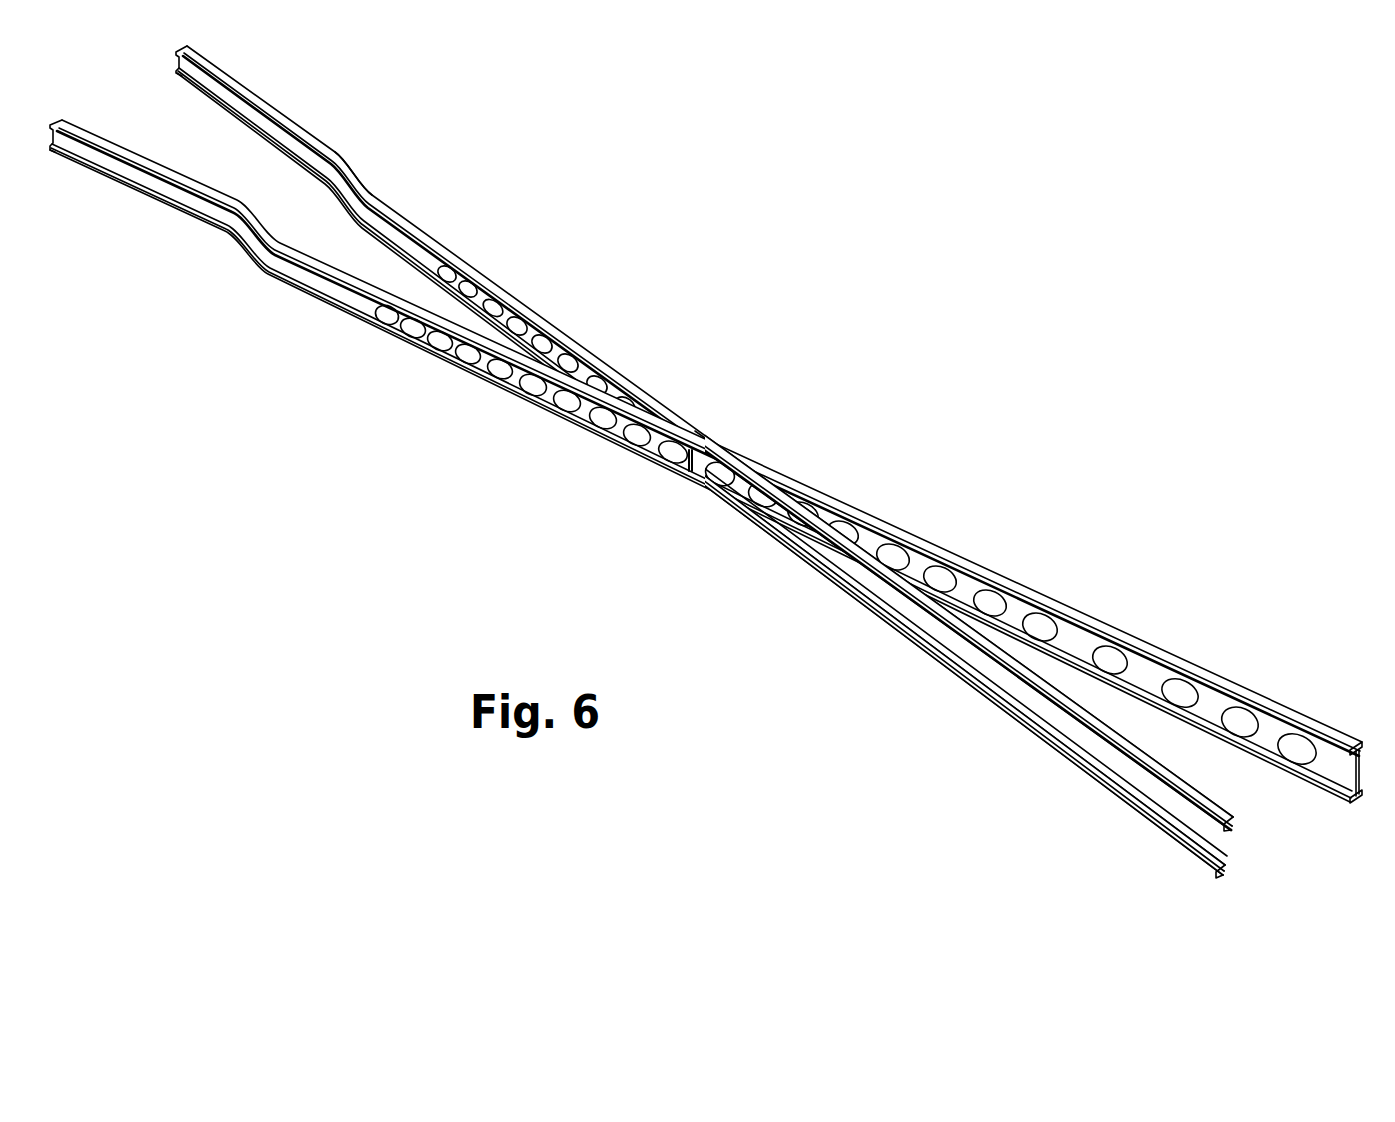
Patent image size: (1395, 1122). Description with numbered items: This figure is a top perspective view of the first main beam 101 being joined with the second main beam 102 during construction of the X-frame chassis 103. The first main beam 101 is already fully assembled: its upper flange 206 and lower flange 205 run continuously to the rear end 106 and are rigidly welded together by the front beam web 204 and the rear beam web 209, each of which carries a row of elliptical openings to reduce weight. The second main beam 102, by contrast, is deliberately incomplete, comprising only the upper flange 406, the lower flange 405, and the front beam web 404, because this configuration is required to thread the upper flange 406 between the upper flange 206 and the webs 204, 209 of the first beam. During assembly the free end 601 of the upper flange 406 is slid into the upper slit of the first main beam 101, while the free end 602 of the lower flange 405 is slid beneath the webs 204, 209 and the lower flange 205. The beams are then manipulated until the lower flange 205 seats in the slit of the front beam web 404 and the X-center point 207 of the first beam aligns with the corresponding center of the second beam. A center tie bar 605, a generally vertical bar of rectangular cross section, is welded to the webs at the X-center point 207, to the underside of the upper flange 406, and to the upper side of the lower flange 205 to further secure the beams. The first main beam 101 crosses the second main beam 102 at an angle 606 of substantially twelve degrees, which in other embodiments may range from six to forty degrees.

The first main beam 101 is at (720, 485).
The second main beam 102 is at (704, 460).
The chassis 103 is at (672, 240).
The rear end of the first main beam 106 is at (1308, 728).
The front beam web 204 is at (371, 300).
The lower flange 205 is at (1326, 794).
The upper flange 206 is at (1068, 604).
The X-center point 207 is at (700, 428).
The rear beam web 209 is at (873, 547).
The front beam web 404 is at (379, 216).
The lower flange 405 is at (794, 563).
The upper flange 406 is at (836, 528).
The free end of the upper flange 601 is at (1224, 830).
The free end of the lower flange 602 is at (1218, 876).
The center tie bar 605 is at (685, 487).
The angle 606 is at (406, 292).